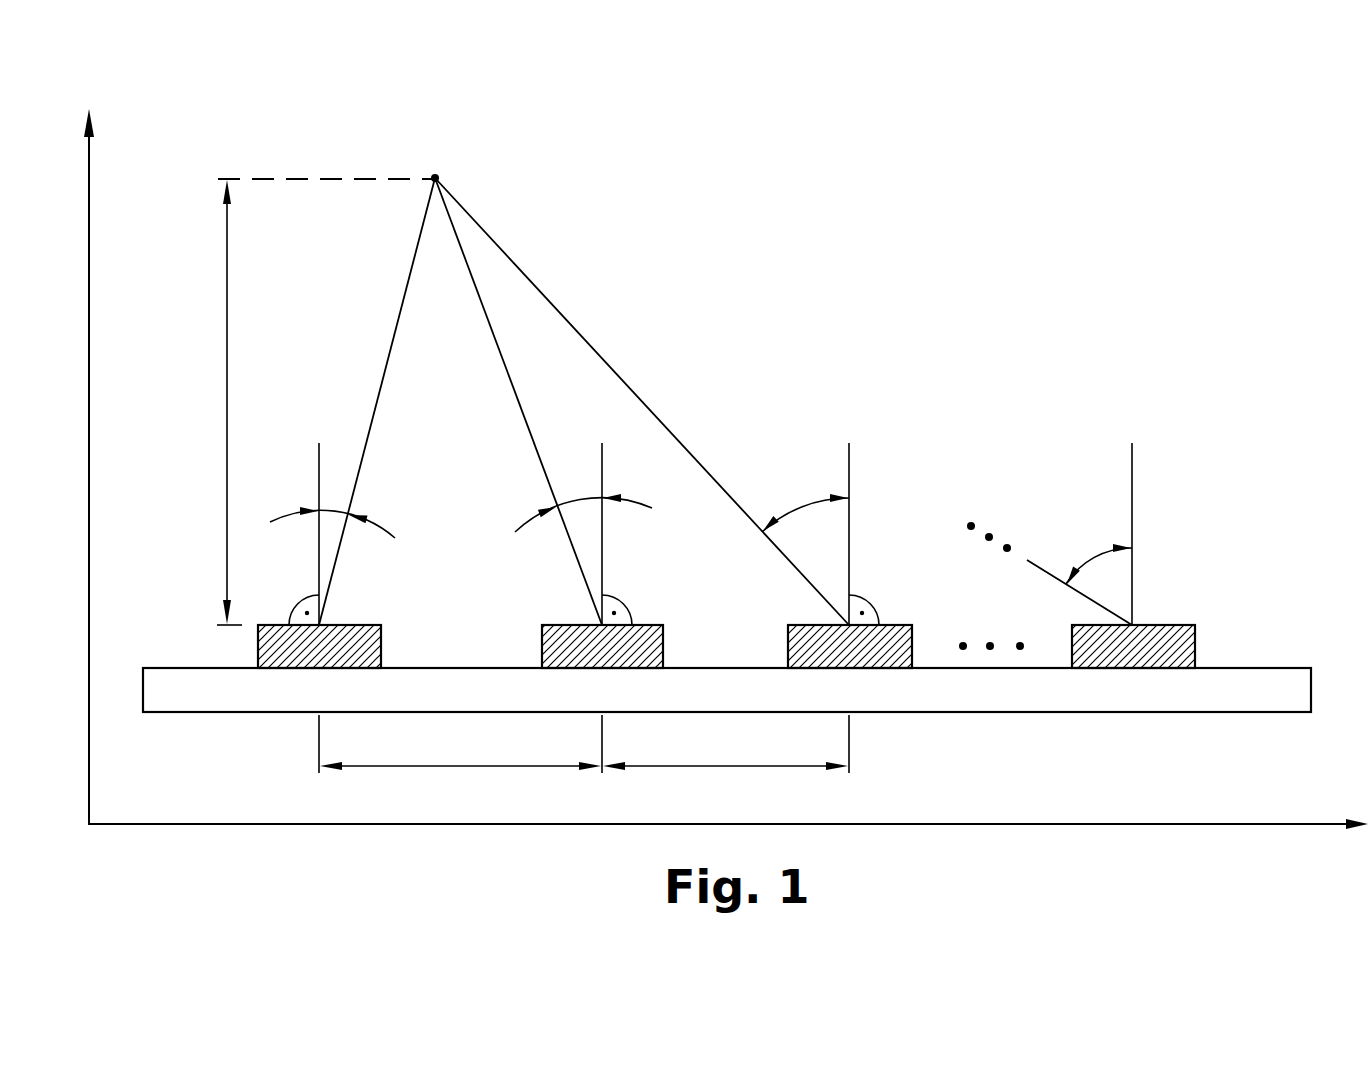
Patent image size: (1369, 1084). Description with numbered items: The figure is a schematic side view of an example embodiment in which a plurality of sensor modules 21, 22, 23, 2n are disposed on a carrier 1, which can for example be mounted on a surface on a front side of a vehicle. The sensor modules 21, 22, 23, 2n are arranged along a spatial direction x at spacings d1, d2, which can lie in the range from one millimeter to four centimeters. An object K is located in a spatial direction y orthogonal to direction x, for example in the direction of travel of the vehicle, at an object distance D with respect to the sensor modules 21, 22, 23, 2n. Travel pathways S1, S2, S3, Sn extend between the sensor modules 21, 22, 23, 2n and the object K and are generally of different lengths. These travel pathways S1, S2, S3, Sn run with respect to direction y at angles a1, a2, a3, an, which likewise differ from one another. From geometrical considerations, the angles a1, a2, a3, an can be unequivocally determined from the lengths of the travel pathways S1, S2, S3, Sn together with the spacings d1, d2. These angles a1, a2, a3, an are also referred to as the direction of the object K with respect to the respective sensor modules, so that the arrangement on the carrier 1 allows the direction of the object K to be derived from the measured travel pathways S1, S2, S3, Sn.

The carrier 1 is at (173, 684).
The sensor module 21 is at (374, 639).
The sensor module 22 is at (657, 639).
The sensor module 23 is at (898, 638).
The sensor module 2n is at (1183, 638).
The object K is at (435, 176).
The object distance D is at (227, 415).
The travel pathway S1 is at (390, 358).
The travel pathway S2 is at (513, 378).
The travel pathway S3 is at (648, 408).
The travel pathway Sn is at (1033, 559).
The angle a1 is at (333, 512).
The angle a2 is at (575, 501).
The angle a3 is at (794, 512).
The angle an is at (1092, 552).
The spacing d1 is at (460, 744).
The spacing d2 is at (726, 744).
The spatial direction x is at (1337, 826).
The spatial direction y is at (89, 157).